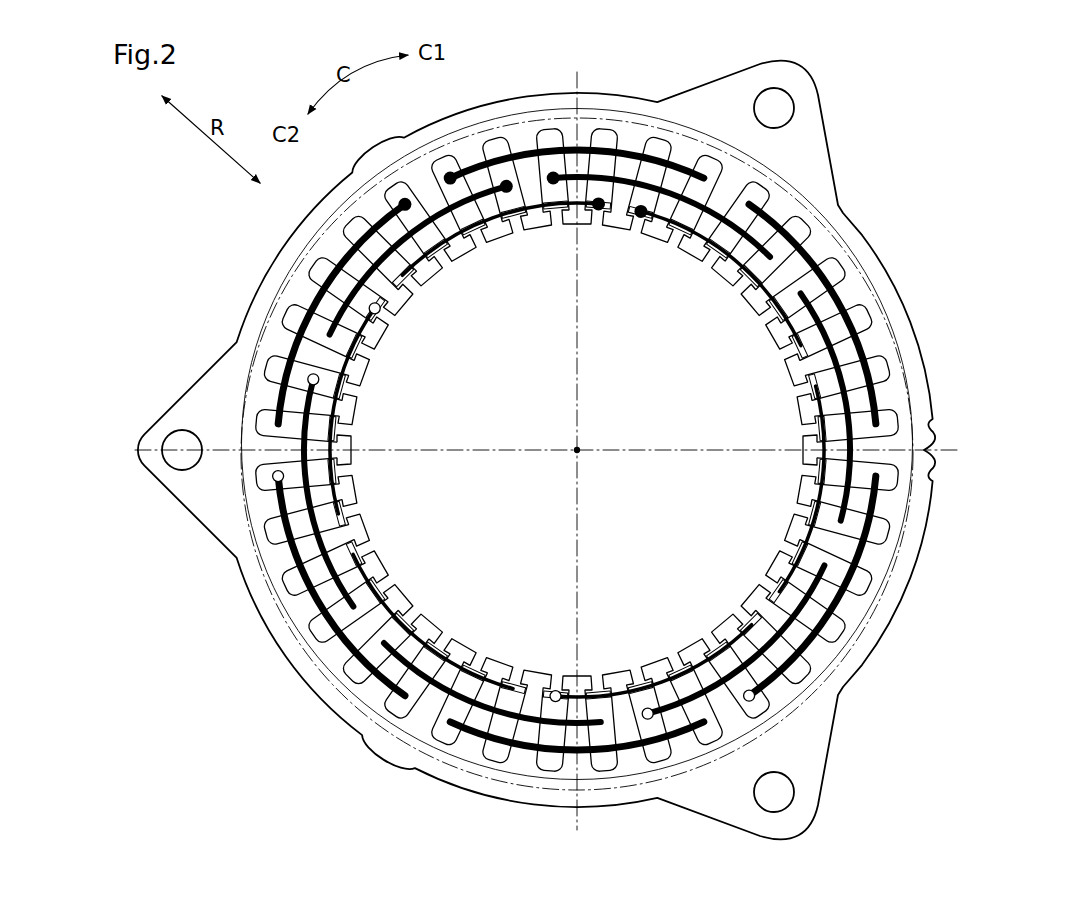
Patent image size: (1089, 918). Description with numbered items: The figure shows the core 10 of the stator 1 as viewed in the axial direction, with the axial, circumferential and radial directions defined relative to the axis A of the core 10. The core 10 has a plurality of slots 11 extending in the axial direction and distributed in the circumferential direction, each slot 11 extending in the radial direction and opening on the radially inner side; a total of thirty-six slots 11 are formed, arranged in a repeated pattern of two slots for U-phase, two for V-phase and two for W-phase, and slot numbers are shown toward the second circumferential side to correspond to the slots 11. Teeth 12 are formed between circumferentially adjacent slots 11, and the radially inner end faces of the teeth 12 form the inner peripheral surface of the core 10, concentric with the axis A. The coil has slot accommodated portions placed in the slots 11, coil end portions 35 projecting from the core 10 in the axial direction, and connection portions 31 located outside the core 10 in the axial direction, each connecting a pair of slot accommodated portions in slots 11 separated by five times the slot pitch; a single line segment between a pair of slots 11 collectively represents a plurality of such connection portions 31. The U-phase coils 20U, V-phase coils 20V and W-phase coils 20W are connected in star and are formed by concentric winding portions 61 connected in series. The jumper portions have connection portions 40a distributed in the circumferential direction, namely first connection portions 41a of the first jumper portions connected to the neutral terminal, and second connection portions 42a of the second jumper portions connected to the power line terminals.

The stator 1 is at (609, 450).
The core 10 is at (240, 582).
The slots 11 is at (347, 633).
The teeth 12 is at (428, 632).
The connection portion 31 is at (445, 252).
The coil end portion 35 is at (335, 698).
The connection portion 40a is at (611, 460).
The first connection portion 41a is at (400, 205).
The second connection portion 42a is at (505, 184).
The concentric winding portion 61 is at (840, 411).
The U-phase coils 20U is at (801, 320).
The V-phase coils 20V is at (884, 502).
The W-phase coils 20W is at (777, 569).
The axis A is at (577, 450).